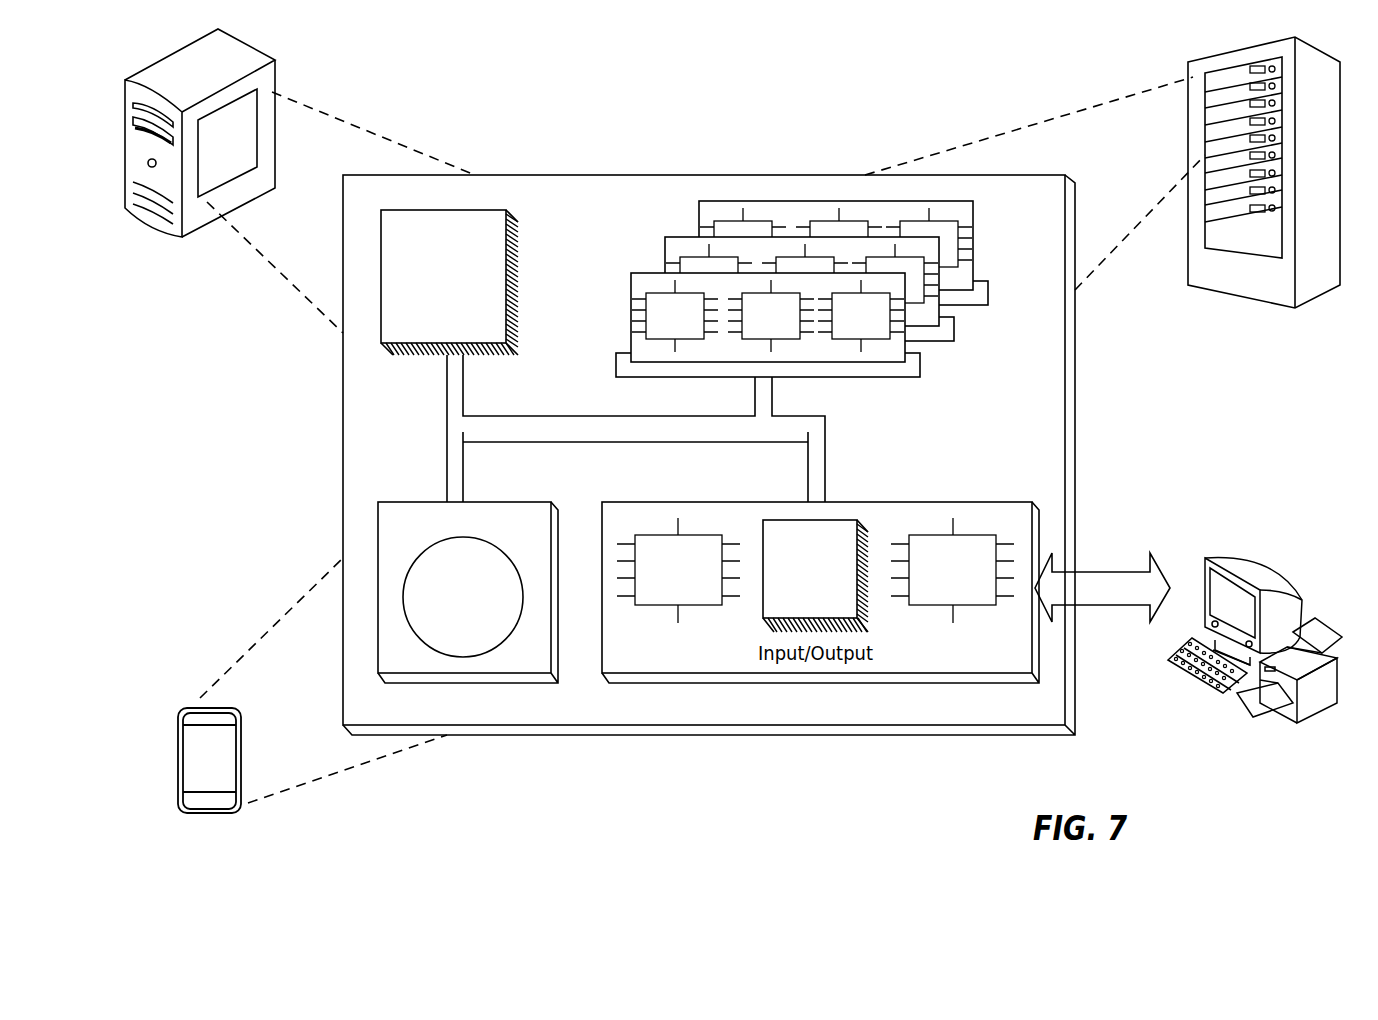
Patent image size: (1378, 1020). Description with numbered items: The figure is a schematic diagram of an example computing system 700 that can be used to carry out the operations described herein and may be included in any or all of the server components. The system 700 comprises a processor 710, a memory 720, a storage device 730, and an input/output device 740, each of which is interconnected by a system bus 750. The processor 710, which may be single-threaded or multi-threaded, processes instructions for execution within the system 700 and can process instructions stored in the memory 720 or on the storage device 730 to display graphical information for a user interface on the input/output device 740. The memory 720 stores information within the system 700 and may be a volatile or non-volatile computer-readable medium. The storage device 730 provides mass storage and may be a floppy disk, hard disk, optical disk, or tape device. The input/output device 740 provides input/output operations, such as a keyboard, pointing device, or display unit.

The computing system 700 is at (536, 97).
The processor 710 is at (497, 336).
The memory 720 is at (978, 340).
The storage device 730 is at (541, 666).
The input/output device 740 is at (1205, 559).
The system bus 750 is at (631, 431).